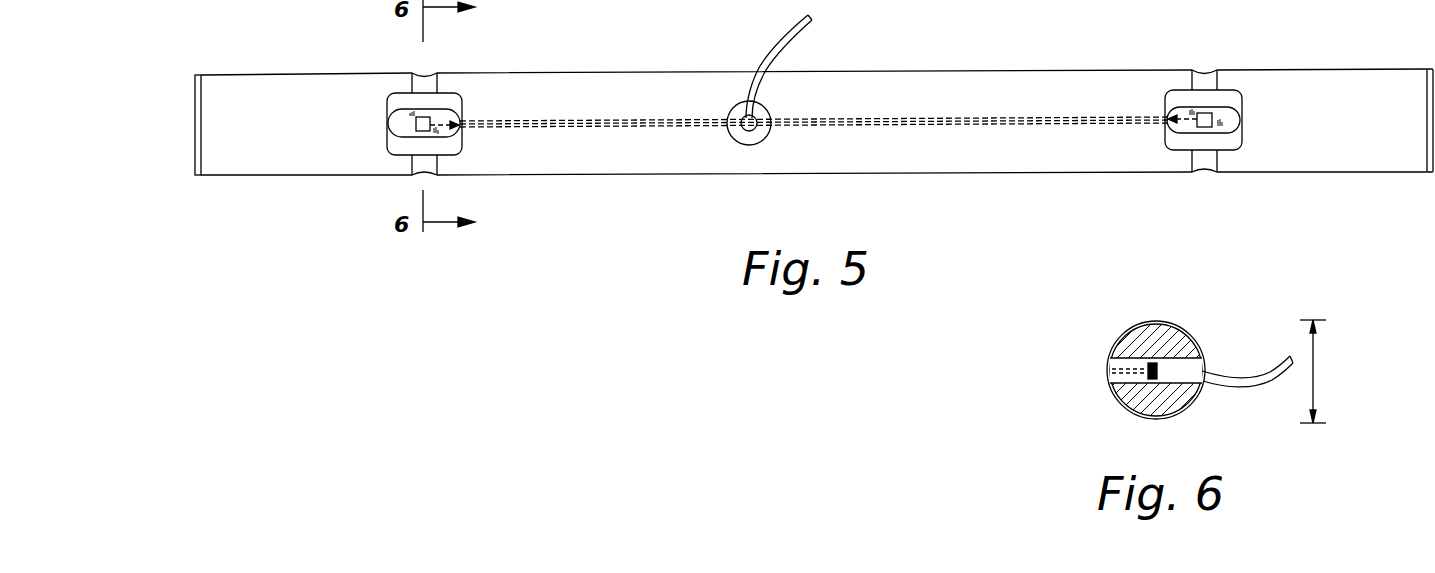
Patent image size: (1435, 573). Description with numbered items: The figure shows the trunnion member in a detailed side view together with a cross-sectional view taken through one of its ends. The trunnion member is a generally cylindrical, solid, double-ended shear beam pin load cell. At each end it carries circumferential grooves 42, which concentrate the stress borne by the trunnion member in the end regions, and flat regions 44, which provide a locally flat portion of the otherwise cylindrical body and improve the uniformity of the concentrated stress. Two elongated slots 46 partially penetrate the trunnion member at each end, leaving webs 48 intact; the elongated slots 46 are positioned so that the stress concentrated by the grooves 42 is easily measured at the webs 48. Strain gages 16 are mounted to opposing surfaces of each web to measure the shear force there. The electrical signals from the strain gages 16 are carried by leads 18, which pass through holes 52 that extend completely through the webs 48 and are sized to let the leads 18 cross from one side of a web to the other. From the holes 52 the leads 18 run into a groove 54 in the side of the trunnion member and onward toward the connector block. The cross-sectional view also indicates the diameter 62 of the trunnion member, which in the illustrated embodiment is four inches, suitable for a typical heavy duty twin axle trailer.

In FIG. 5, the strain gages 16 is at (425, 133).
In FIG. 6, the strain gages 16 is at (1150, 381).
In FIG. 5, the leads 18 is at (688, 118).
In FIG. 5, the circumferential grooves 42 is at (431, 86).
In FIG. 5, the flat regions 44 is at (392, 152).
In FIG. 6, the flat regions 44 is at (1108, 364).
In FIG. 5, the elongated slots 46 is at (392, 108).
In FIG. 6, the elongated slots 46 is at (1121, 398).
In FIG. 6, the webs 48 is at (1150, 362).
In FIG. 5, the holes 52 is at (460, 127).
In FIG. 5, the groove 54 is at (822, 118).
In FIG. 6, the groove 54 is at (1108, 372).
In FIG. 6, the diameter 62 is at (1318, 353).